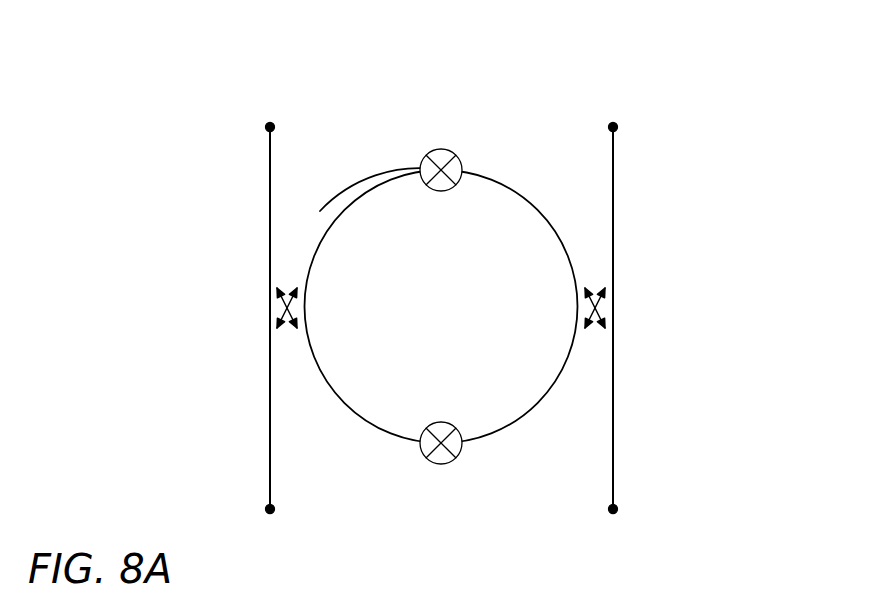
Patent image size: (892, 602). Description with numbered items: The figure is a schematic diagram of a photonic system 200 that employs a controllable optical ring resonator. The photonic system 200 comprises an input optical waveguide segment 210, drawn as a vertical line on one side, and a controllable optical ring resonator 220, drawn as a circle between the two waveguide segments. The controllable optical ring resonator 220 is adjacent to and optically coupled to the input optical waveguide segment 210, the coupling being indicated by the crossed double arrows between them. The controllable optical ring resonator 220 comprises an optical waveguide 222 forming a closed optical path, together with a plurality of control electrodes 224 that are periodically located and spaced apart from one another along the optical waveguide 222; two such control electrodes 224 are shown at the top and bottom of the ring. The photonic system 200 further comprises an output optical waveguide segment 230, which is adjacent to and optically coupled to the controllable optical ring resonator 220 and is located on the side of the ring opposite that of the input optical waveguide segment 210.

The photonic system 200 is at (665, 80).
The input optical waveguide segment 210 is at (270, 235).
The controllable optical ring resonator 220 is at (466, 322).
The optical waveguide 222 is at (378, 184).
The control electrodes 224 is at (441, 148).
The output optical waveguide segment 230 is at (614, 233).